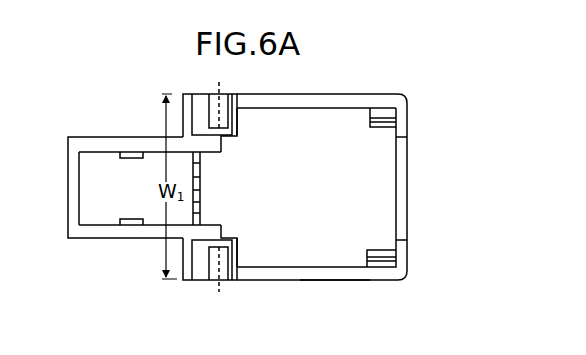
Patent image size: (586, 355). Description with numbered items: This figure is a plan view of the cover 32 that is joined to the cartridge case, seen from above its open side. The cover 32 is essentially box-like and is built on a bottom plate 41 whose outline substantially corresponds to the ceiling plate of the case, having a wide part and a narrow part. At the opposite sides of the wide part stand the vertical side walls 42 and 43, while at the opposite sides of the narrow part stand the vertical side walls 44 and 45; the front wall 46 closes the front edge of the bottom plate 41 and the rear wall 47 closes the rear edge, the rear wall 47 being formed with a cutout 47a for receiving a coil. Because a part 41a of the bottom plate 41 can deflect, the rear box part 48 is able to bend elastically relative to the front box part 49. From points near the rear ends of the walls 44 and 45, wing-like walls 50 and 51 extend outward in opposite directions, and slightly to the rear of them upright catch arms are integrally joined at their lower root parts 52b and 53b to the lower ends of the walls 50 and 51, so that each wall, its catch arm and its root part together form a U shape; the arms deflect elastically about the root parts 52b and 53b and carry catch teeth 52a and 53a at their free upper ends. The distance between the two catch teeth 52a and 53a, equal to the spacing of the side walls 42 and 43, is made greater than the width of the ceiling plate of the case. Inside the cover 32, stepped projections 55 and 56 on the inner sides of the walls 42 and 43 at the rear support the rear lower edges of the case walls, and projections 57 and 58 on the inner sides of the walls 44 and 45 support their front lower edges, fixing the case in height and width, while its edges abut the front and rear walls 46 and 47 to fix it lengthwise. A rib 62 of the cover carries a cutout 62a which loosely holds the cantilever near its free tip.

The cover 32 is at (398, 82).
The bottom plate 41 is at (397, 216).
The part of the bottom plate 41a is at (232, 191).
The vertical side wall 42 is at (318, 281).
The vertical side wall 43 is at (316, 94).
The vertical side wall 44 is at (116, 239).
The vertical side wall 45 is at (117, 136).
The front wall 46 is at (68, 203).
The rear wall 47 is at (408, 136).
The cutout 47a is at (408, 172).
The rear box part 48 is at (371, 284).
The front box part 49 is at (83, 134).
The wing-like wall 50 is at (182, 257).
The wing-like wall 51 is at (183, 123).
The catch tooth 52a is at (232, 281).
The root part 52b is at (201, 277).
The catch tooth 53a is at (226, 94).
The root part 53b is at (197, 95).
The stepped projection 55 is at (367, 256).
The stepped projection 56 is at (370, 121).
The projection 57 is at (127, 217).
The projection 58 is at (133, 158).
The rib 62 is at (201, 214).
The cutout 62a is at (201, 174).